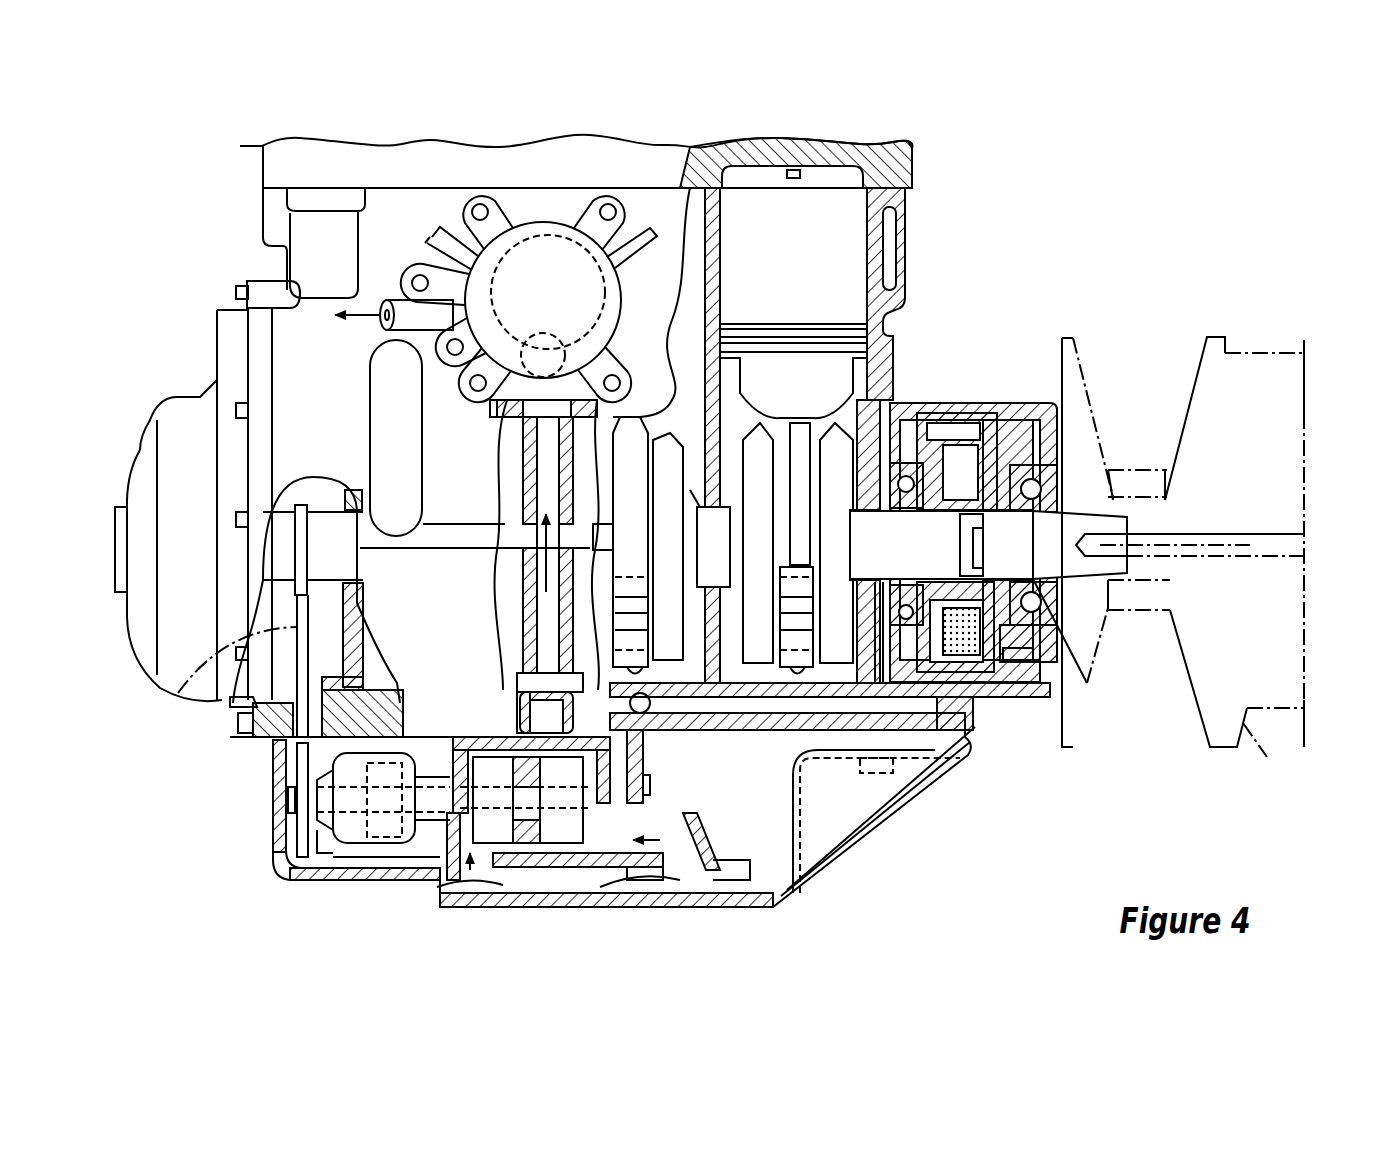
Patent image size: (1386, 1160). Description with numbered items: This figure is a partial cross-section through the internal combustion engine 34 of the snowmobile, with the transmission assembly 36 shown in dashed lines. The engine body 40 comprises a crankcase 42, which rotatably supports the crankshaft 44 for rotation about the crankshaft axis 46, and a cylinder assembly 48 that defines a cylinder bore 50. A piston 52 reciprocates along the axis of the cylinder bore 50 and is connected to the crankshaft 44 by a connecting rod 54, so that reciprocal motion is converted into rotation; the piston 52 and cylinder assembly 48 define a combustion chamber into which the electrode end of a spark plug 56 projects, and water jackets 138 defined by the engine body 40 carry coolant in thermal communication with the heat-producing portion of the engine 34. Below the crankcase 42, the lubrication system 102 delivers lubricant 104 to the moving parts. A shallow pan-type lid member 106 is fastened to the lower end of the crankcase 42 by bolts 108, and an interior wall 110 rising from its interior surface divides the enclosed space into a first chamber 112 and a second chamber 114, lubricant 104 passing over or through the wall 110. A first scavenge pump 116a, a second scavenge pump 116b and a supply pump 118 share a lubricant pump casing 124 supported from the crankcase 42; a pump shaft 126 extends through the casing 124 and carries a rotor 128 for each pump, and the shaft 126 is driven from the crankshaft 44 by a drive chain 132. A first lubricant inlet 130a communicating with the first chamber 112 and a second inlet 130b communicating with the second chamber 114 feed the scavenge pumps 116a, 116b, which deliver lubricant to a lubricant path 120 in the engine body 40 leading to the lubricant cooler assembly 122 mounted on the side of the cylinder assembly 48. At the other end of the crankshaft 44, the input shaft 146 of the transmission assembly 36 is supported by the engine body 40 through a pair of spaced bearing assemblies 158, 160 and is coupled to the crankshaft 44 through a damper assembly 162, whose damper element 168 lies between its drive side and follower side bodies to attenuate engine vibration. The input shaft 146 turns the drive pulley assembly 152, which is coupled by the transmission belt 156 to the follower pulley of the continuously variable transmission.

The internal combustion engine 34 is at (1152, 191).
The transmission assembly 36 is at (1183, 472).
The engine body 40 is at (879, 302).
The crankcase 42 is at (973, 613).
The crankshaft 44 is at (693, 473).
The crankshaft axis 46 is at (1077, 511).
The cylinder assembly 48 is at (927, 354).
The cylinder bore 50 is at (829, 435).
The piston 52 is at (793, 340).
The connecting rod 54 is at (876, 518).
The spark plug 56 is at (796, 189).
The lubrication system 102 is at (554, 818).
The lubricant 104 is at (671, 873).
The lid member 106 is at (878, 811).
The bolts 108 is at (876, 821).
The interior wall 110 is at (606, 886).
The first chamber 112 is at (352, 844).
The second chamber 114 is at (777, 899).
The first scavenge pump 116a is at (501, 688).
The second scavenge pump 116b is at (555, 737).
The supply pump 118 is at (497, 751).
The lubricant path 120 is at (519, 546).
The lubricant cooler assembly 122 is at (496, 299).
The lubricant pump casing 124 is at (378, 847).
The pump shaft 126 is at (253, 826).
The rotor 128 is at (454, 863).
The first lubricant inlet 130a is at (473, 911).
The second lubricant inlet 130b is at (685, 914).
The drive chain 132 is at (206, 578).
The water jacket 138 is at (937, 231).
The input shaft 146 is at (1090, 629).
The drive pulley assembly 152 is at (1237, 709).
The transmission belt 156 is at (1146, 662).
The bearing assembly 158 is at (973, 638).
The bearing assembly 160 is at (1007, 674).
The damper assembly 162 is at (1033, 430).
The damper element 168 is at (982, 669).